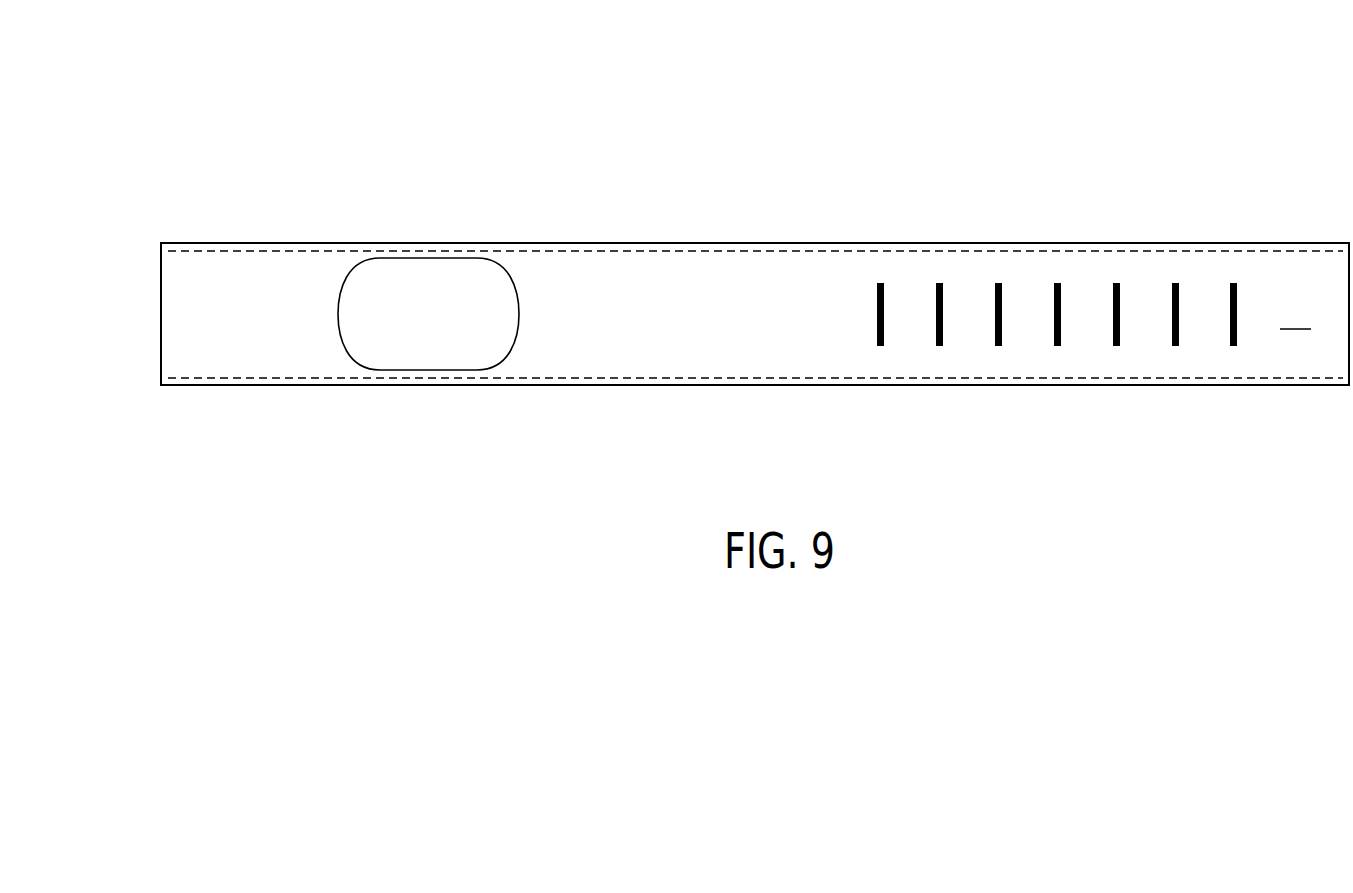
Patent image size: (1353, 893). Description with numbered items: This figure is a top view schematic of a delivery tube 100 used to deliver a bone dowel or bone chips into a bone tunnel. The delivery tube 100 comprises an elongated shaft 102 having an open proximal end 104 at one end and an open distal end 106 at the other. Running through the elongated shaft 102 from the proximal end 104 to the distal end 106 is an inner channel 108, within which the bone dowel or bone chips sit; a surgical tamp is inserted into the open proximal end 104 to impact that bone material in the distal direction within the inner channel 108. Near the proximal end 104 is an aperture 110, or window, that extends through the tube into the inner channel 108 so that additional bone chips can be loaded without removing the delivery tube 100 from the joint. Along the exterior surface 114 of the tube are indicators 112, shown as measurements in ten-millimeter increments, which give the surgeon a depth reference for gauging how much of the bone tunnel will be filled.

The delivery tube 100 is at (874, 130).
The elongated shaft 102 is at (652, 242).
The proximal end 104 is at (205, 422).
The distal end 106 is at (1316, 404).
The inner channel 108 is at (136, 319).
The aperture 110 is at (415, 268).
The indicators 112 is at (1233, 285).
The exterior surface 114 is at (1295, 313).